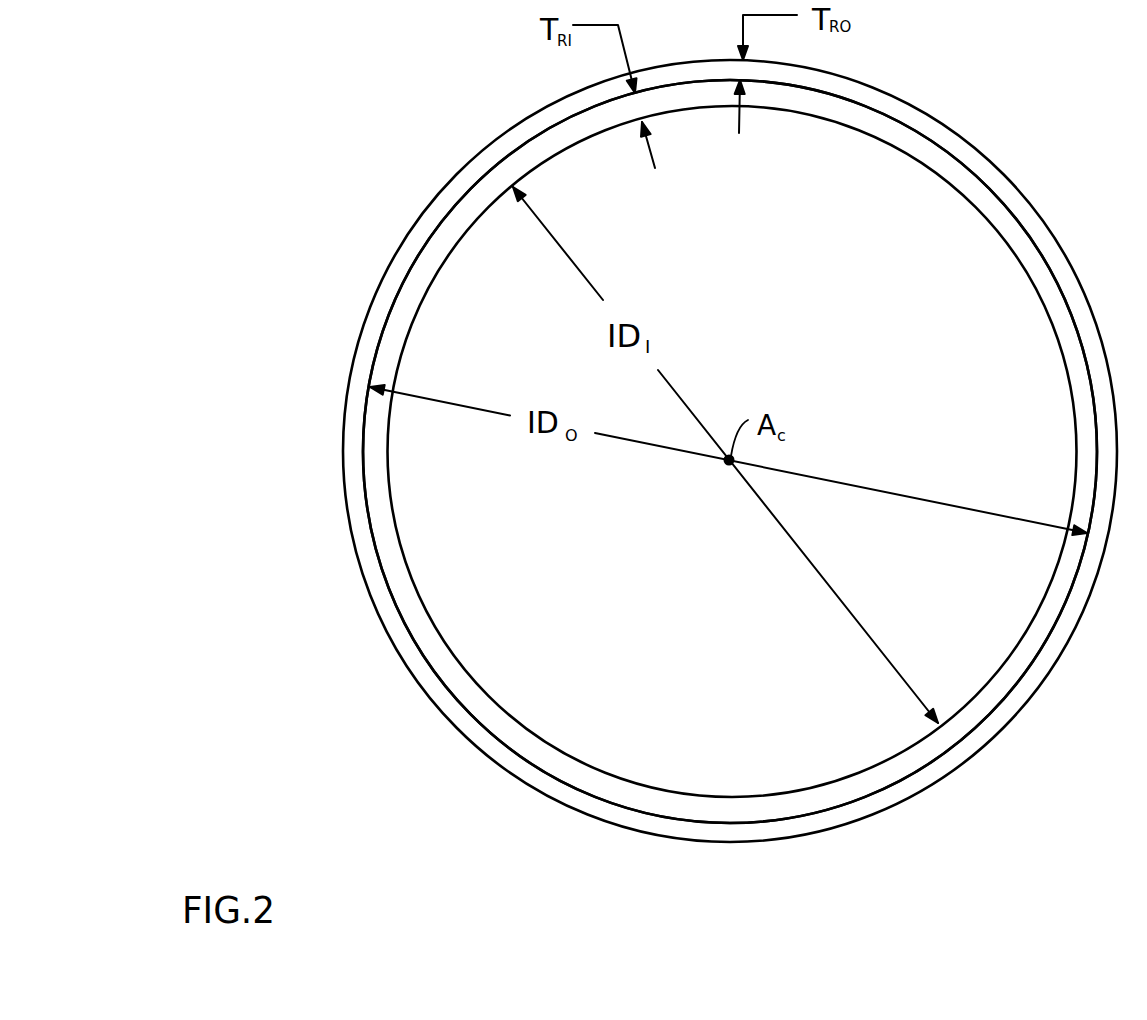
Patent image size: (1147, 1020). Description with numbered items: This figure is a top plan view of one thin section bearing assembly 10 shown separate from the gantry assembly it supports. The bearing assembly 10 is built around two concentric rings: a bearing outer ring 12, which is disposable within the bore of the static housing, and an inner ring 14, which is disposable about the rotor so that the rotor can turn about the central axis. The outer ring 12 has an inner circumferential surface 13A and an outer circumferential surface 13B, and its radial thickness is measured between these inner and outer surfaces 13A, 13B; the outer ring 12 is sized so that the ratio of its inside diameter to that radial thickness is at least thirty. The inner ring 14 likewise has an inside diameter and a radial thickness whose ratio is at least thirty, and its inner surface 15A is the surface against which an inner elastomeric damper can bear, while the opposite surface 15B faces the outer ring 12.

The thin section bearing assembly 10 is at (703, 451).
The bearing outer ring 12 is at (703, 451).
The inner circumferential surface 13A is at (1018, 218).
The outer circumferential surface 13B is at (1025, 195).
The inner ring 14 is at (703, 451).
The inner surface 15A is at (433, 632).
The outer surface of inner ring 15B is at (407, 640).